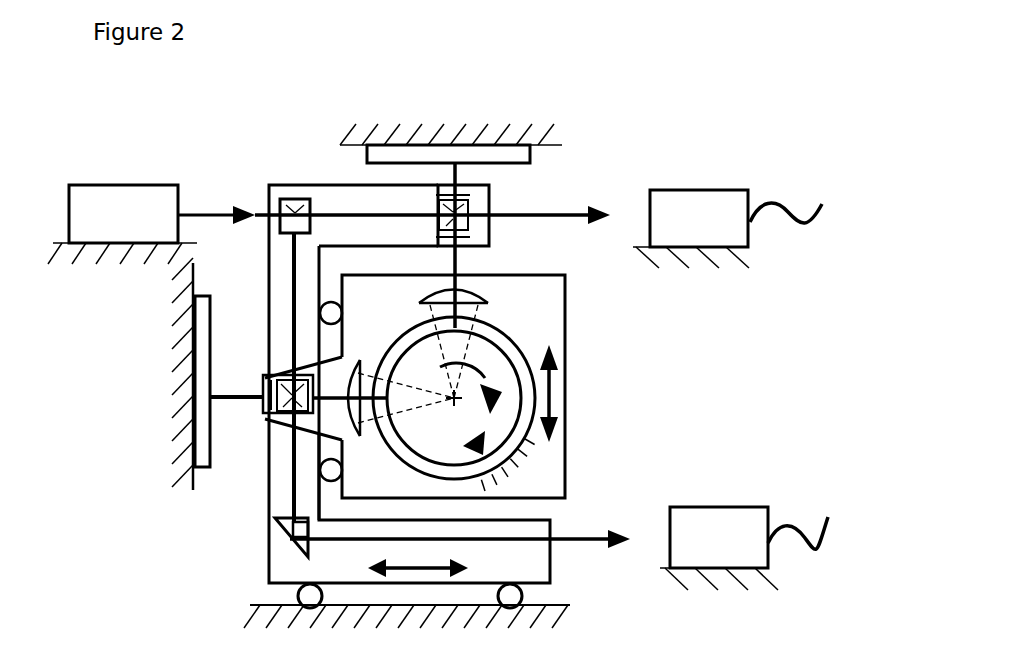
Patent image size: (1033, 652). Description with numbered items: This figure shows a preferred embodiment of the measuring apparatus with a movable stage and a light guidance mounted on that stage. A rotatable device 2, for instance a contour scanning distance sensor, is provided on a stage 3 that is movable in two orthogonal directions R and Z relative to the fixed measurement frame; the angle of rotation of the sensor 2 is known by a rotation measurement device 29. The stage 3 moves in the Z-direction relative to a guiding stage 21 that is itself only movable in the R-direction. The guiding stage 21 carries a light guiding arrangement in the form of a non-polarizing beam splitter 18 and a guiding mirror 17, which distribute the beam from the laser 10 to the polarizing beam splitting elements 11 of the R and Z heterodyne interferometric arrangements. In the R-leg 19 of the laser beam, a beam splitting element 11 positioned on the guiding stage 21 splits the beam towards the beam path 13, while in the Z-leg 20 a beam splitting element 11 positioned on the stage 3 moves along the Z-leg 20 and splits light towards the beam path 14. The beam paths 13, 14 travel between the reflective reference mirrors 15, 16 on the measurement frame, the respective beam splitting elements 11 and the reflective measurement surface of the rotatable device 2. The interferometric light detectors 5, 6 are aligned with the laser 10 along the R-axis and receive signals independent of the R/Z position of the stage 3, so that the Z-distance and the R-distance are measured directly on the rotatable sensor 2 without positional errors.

The rotatable device 2 is at (439, 444).
The stage 3 is at (371, 485).
The interferometric light detector 5 is at (695, 222).
The interferometric light detector 6 is at (706, 554).
The laser 10 is at (122, 224).
The beam splitting element 11 is at (470, 195).
The beam path 13 is at (455, 265).
The beam path 14 is at (263, 388).
The reflective reference mirror 15 is at (423, 150).
The reflective reference mirror 16 is at (193, 423).
The guiding mirror 17 is at (275, 520).
The beam splitter 18 is at (288, 207).
The R-leg 19 is at (360, 214).
The Z-leg 20 is at (292, 325).
The guiding stage 21 is at (534, 574).
The rotation measurement device 29 is at (523, 458).